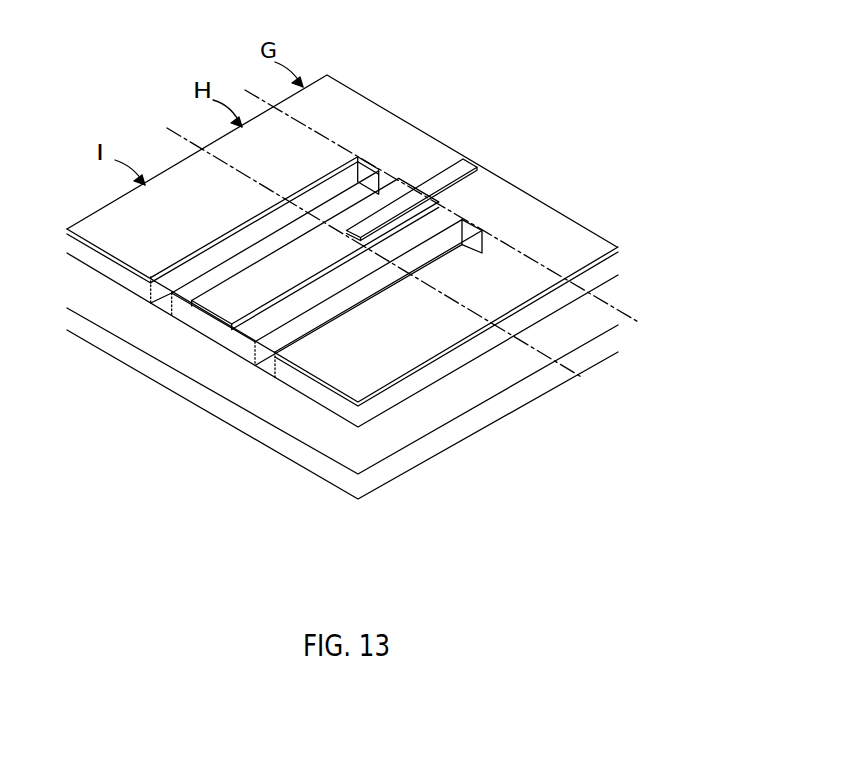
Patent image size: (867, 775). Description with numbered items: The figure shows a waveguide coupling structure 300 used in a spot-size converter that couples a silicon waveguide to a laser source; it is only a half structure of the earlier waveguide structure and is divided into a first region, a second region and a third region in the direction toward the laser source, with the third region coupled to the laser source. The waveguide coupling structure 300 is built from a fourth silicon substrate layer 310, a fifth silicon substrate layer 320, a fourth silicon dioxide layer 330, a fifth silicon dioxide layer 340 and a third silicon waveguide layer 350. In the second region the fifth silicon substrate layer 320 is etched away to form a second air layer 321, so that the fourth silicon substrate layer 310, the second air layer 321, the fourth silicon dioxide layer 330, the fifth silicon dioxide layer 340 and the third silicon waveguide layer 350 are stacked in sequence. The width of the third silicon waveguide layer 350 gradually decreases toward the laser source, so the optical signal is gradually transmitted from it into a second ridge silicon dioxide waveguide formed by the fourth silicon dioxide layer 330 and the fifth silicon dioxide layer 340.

The waveguide coupling structure 300 is at (353, 308).
The fourth silicon substrate layer 310 is at (383, 475).
The fifth silicon substrate layer 320 is at (405, 432).
The second air layer 321 is at (243, 380).
The fourth silicon dioxide layer 330 is at (403, 392).
The fifth silicon dioxide layer 340 is at (445, 353).
The third silicon waveguide layer 350 is at (459, 166).